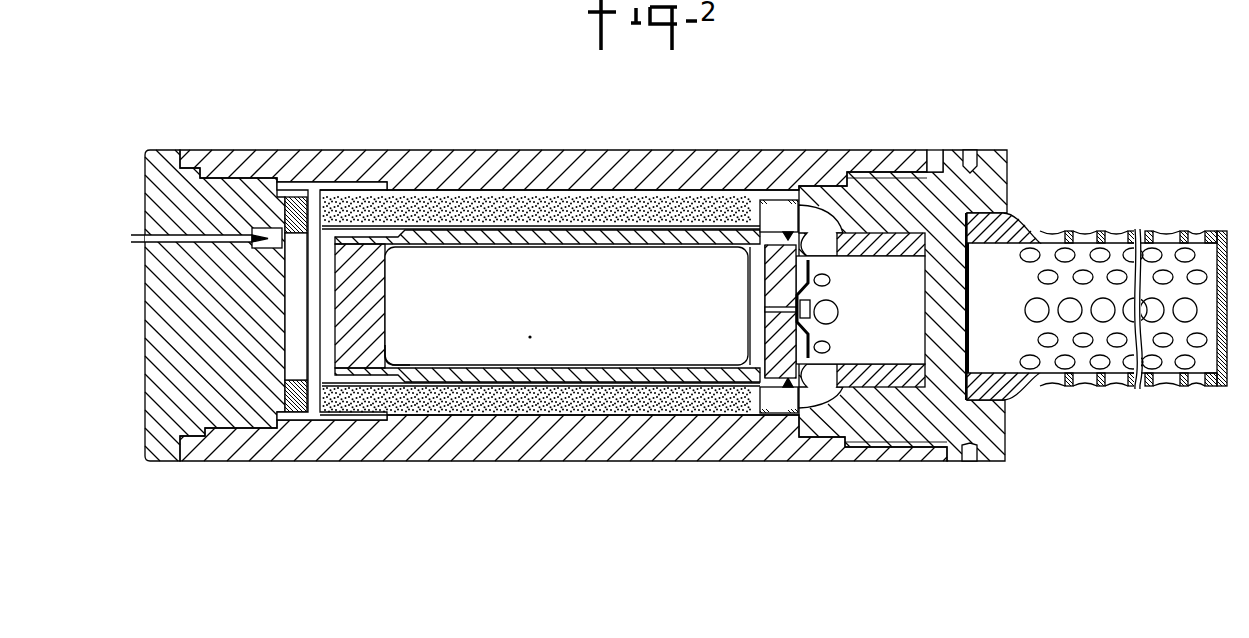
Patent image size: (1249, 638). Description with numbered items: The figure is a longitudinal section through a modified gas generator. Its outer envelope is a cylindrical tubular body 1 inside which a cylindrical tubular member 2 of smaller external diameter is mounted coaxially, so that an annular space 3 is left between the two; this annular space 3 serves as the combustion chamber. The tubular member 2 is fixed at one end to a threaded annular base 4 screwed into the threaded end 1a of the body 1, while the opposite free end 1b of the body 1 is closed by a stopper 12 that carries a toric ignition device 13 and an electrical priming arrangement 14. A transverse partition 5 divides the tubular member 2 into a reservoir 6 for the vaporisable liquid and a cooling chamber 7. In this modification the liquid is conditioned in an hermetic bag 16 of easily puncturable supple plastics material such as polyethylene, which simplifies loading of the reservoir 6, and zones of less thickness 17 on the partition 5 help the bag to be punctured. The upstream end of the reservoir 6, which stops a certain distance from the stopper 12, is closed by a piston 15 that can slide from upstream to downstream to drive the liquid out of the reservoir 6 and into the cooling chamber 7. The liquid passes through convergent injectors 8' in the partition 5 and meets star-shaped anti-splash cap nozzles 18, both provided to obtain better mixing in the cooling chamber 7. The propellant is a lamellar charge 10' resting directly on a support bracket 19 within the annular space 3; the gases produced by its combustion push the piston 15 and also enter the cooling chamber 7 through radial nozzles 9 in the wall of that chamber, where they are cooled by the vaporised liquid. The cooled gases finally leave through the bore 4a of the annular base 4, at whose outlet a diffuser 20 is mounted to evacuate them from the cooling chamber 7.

The cylindrical tubular body 1 is at (611, 171).
The threaded end 1a is at (943, 165).
The free end 1b is at (314, 160).
The cylindrical tubular member 2 is at (510, 238).
The annular space 3 is at (777, 200).
The threaded annular base 4 is at (909, 186).
The bore 4a is at (960, 297).
The partition 5 is at (789, 381).
The reservoir 6 is at (566, 306).
The cooling chamber 7 is at (910, 322).
The convergent injectors 8' is at (745, 311).
The radial nozzles 9 is at (823, 255).
The lamellar charge 10' is at (559, 261).
The stopper 12 is at (163, 175).
The toric ignition device 13 is at (297, 411).
The electrical priming arrangement 14 is at (132, 238).
The piston 15 is at (367, 309).
The hermetic bag 16 is at (387, 351).
The zones of less thickness 17 is at (760, 362).
The star-shaped anti-splash cap nozzles 18 is at (813, 338).
The support bracket 19 is at (790, 200).
The diffuser 20 is at (1016, 230).